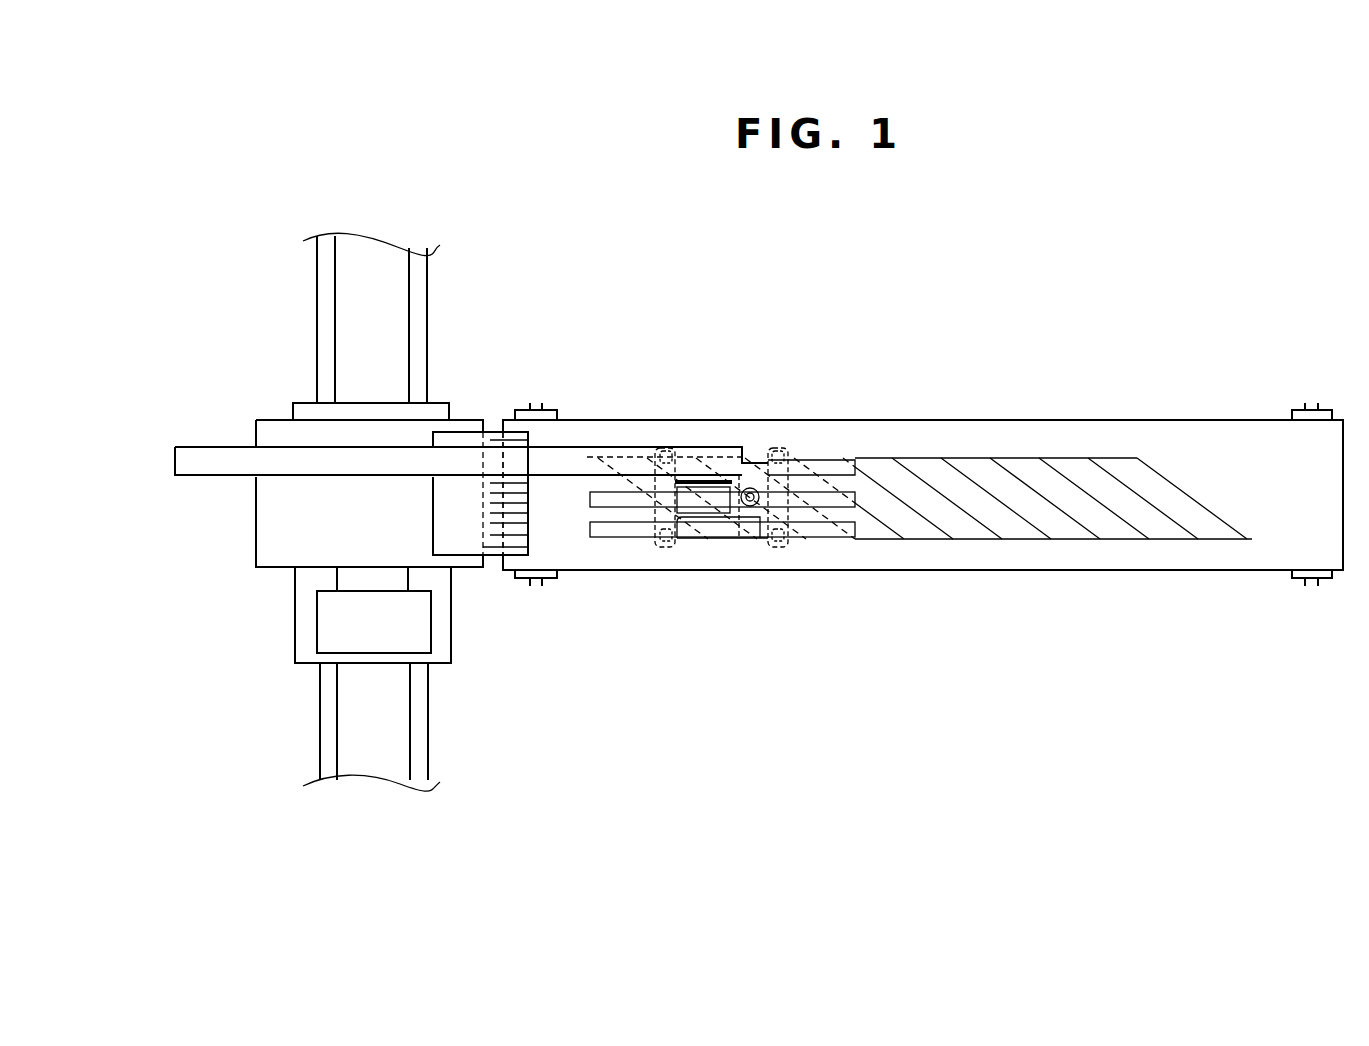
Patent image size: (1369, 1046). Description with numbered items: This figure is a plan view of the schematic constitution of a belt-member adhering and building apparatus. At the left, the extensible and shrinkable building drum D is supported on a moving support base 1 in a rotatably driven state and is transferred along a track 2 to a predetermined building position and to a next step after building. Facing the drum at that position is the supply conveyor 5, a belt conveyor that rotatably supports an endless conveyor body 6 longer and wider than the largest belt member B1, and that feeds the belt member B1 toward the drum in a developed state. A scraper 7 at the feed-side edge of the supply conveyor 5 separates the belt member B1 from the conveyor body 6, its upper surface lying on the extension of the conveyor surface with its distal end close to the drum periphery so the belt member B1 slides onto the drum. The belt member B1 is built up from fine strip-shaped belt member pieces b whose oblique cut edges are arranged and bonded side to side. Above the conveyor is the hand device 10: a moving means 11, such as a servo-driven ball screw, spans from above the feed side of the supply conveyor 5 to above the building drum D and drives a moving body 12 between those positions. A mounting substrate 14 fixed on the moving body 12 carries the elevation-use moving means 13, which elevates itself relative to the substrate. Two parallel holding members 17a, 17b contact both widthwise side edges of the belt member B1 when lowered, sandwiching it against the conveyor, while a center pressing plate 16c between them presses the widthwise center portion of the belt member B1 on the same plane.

The moving support base 1 is at (320, 630).
The track 2 is at (325, 298).
The supply conveyor 5 is at (1227, 417).
The conveyor body 6 is at (1153, 428).
The scraper 7 is at (463, 542).
The hand device 10 is at (755, 452).
The moving means 11 is at (373, 455).
The moving body 12 is at (723, 478).
The elevation-use moving means 13 is at (700, 507).
The mounting substrate 14 is at (698, 480).
The pressing plate 16c is at (825, 497).
The holding member 17a is at (825, 463).
The holding member 17b is at (613, 528).
The belt member pieces b is at (1015, 467).
The belt member B1 is at (1023, 535).
The building drum D is at (298, 520).